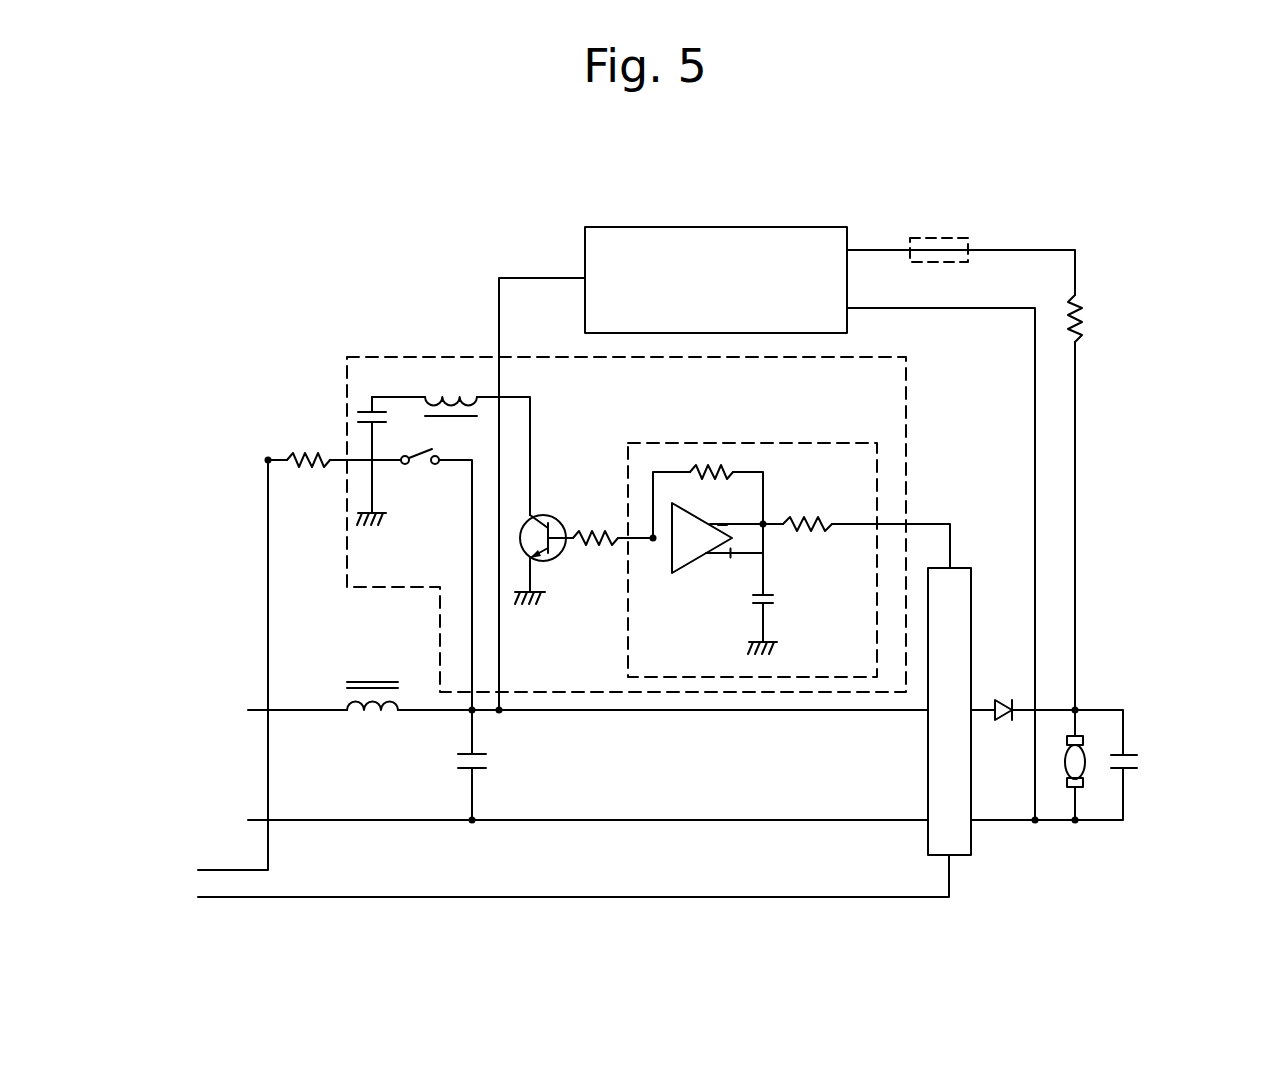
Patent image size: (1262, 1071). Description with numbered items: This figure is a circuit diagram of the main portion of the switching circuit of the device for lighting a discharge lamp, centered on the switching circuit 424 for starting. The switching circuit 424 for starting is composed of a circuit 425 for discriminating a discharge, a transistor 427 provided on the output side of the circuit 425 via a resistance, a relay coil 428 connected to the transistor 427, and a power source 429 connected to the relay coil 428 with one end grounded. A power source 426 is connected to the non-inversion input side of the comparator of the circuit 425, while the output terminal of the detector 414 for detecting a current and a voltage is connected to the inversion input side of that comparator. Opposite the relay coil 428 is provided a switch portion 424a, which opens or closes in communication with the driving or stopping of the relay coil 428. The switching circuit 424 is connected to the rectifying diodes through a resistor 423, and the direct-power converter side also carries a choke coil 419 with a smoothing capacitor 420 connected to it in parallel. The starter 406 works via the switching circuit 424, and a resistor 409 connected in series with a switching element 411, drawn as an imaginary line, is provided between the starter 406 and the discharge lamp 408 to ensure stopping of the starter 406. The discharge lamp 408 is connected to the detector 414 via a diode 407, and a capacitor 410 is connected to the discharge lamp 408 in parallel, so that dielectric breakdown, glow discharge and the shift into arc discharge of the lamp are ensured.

The starter 406 is at (720, 240).
The diode 407 is at (1007, 698).
The discharge lamp 408 is at (1084, 755).
The resistor 409 is at (1082, 316).
The capacitor 410 is at (1140, 764).
The switching element 411 is at (938, 238).
The detector for detecting a current and a voltage 414 is at (965, 572).
The choke coil 419 is at (372, 712).
The smoothing capacitor 420 is at (487, 762).
The resistor 423 is at (288, 450).
The switching circuit for starting 424 is at (336, 540).
The switch portion 424a is at (408, 466).
The circuit for discriminating a discharge 425 is at (750, 440).
The power source 426 is at (768, 600).
The transistor 427 is at (556, 516).
The relay coil 428 is at (446, 380).
The power source 429 is at (362, 396).